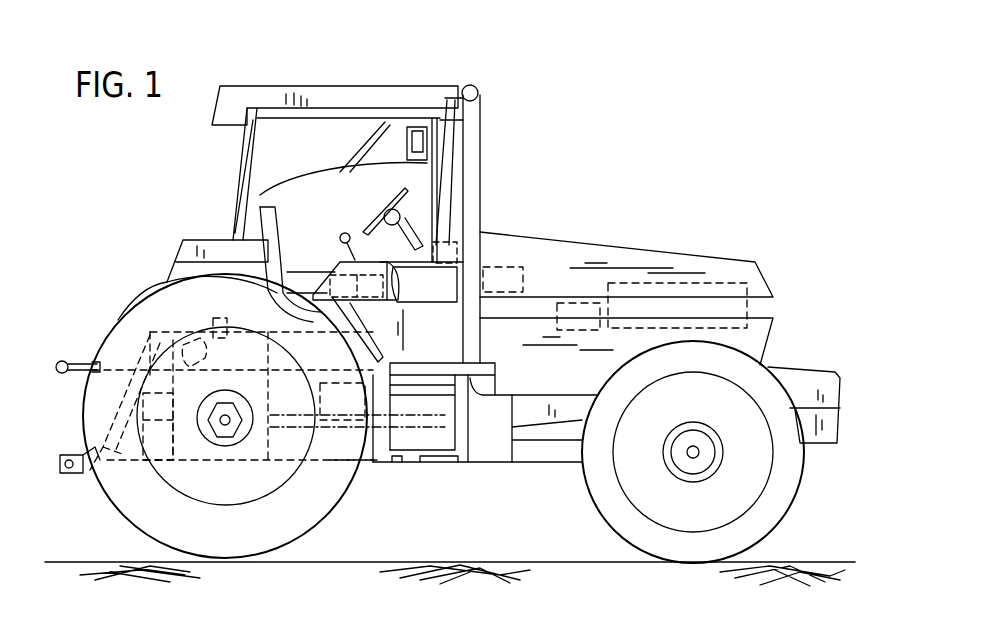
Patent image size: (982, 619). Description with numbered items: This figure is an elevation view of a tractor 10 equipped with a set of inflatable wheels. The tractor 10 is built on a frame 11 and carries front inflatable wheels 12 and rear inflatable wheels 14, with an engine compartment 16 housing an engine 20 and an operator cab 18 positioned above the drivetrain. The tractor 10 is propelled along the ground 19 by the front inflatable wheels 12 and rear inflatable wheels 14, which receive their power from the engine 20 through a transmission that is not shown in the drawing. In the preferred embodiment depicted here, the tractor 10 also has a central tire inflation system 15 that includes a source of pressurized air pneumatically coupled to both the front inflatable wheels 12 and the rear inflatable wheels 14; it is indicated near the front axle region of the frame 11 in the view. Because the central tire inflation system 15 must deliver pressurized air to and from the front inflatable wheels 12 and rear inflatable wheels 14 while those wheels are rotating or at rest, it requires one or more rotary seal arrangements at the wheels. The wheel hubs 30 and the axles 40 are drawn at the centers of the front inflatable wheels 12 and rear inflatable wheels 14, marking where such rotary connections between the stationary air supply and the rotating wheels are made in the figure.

The tractor 10 is at (612, 113).
The frame 11 is at (520, 462).
The front inflatable wheels 12 is at (752, 380).
The rear inflatable wheels 14 is at (140, 318).
The central tire inflation system 15 is at (360, 472).
The engine compartment 16 is at (655, 258).
The operator cab 18 is at (367, 188).
The ground 19 is at (565, 562).
The engine 20 is at (720, 280).
The wheel hub 30 is at (232, 442).
The axle 40 is at (225, 420).